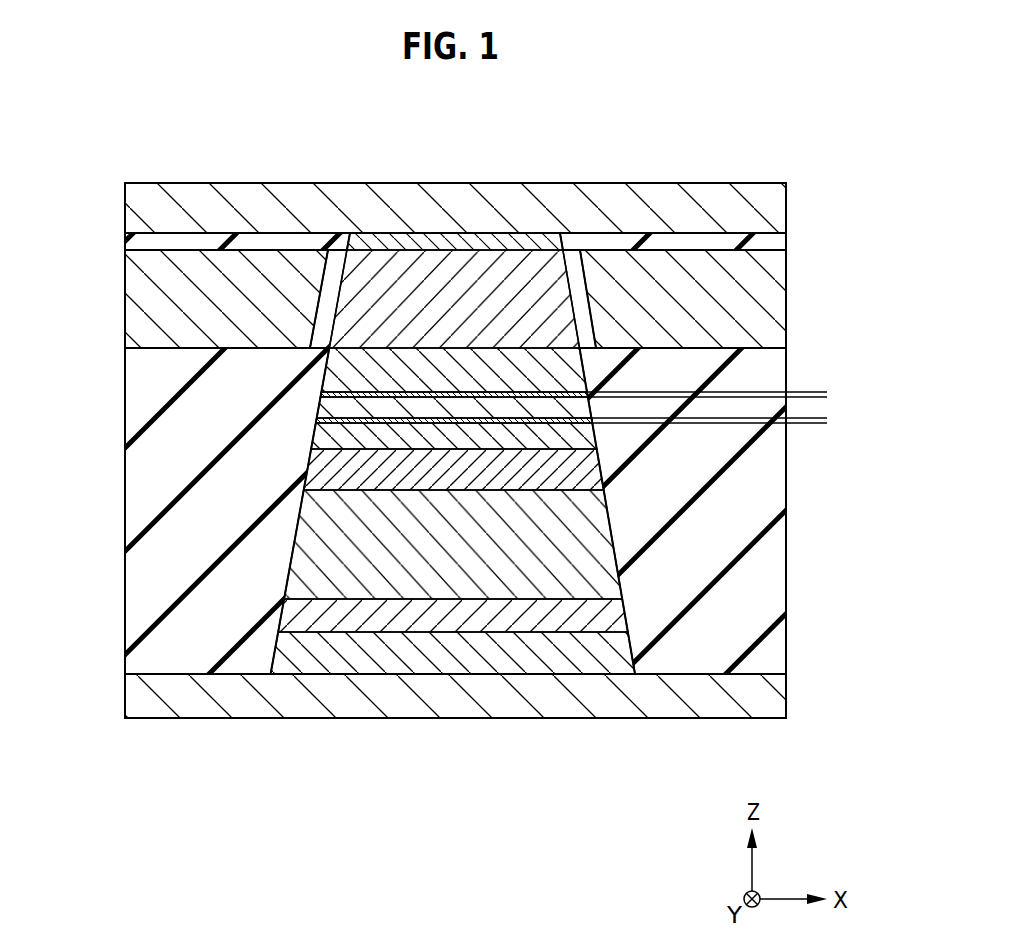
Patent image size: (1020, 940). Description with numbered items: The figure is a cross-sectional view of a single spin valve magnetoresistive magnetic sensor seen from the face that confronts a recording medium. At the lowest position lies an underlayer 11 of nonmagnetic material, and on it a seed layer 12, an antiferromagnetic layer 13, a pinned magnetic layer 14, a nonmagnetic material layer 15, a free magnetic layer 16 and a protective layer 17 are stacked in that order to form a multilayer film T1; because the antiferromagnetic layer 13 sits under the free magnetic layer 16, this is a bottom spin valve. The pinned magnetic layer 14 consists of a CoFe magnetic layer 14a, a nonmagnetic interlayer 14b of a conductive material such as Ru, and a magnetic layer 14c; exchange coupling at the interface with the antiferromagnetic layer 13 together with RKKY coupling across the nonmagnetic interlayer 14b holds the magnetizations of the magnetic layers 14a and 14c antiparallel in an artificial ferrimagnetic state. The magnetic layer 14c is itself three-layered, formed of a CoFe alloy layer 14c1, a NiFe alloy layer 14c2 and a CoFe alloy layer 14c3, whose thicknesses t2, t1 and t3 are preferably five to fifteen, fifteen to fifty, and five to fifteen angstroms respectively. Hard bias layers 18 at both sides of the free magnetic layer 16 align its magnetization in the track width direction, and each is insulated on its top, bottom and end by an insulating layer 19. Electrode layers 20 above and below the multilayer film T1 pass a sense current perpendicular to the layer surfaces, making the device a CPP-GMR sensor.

The underlayer 11 is at (608, 655).
The seed layer 12 is at (565, 613).
The antiferromagnetic layer 13 is at (527, 570).
The pinned magnetic layer 14 is at (424, 612).
The magnetic layer 14a is at (337, 480).
The nonmagnetic interlayer 14b is at (372, 437).
The magnetic layer 14c is at (454, 592).
The CoFe alloy layer 14c1 is at (413, 422).
The NiaFeb alloy layer 14c2 is at (433, 400).
The CoFe alloy layer 14c3 is at (457, 397).
The nonmagnetic material layer 15 is at (488, 365).
The free magnetic layer 16 is at (443, 280).
The protective layer 17 is at (532, 243).
The hard bias layer 18 is at (135, 315).
The insulating layer 19 is at (135, 243).
The electrode layer 20 is at (770, 205).
The multilayer film T1 is at (381, 226).
The thickness of NiaFeb alloy layer t1 is at (816, 418).
The thickness of CoFe layer t2 is at (816, 450).
The thickness of CoFe layer t3 is at (816, 392).